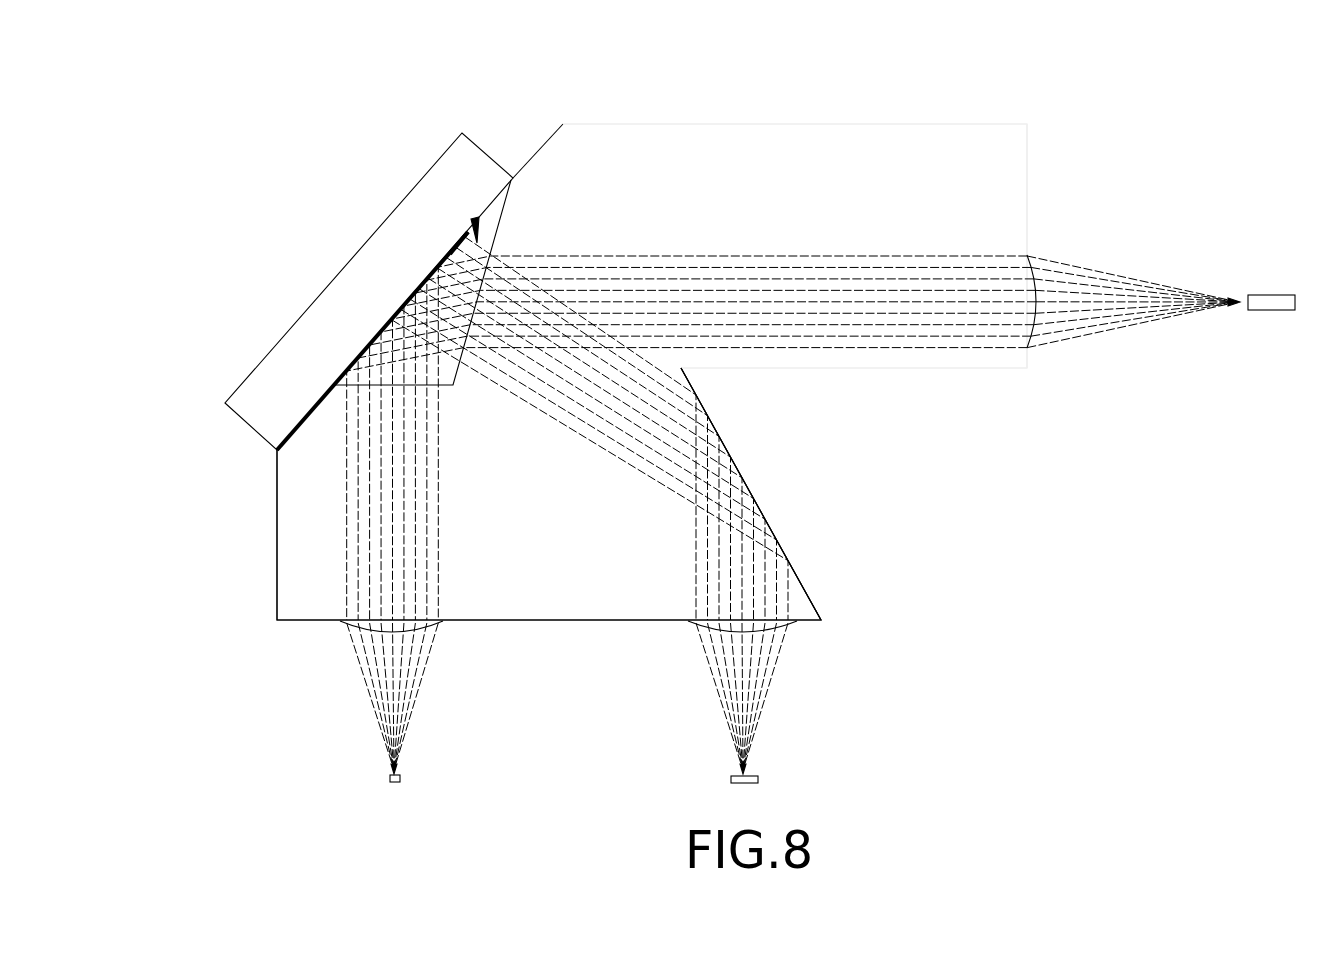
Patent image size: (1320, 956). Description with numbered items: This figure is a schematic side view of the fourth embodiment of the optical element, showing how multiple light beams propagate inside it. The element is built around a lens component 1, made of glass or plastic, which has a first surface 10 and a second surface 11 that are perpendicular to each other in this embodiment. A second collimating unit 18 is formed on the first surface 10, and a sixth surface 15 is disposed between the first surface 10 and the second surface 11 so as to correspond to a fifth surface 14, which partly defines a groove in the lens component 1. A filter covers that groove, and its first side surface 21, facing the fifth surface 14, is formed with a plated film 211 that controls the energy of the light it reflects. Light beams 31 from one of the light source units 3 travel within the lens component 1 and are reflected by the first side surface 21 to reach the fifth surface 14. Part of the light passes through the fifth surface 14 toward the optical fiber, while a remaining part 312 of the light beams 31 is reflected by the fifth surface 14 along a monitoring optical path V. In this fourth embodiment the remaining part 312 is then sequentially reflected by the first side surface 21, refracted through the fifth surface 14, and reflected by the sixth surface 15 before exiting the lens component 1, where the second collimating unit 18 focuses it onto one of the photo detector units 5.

The lens component 1 is at (750, 108).
The first surface 10 is at (612, 620).
The second surface 11 is at (1027, 182).
The fifth surface 14 is at (488, 230).
The sixth surface 15 is at (802, 583).
The second collimating unit 18 is at (780, 625).
The first side surface 21 is at (340, 390).
The plated film 211 is at (397, 313).
The remaining part of the light beams 312 is at (458, 236).
The light beams 31 is at (362, 673).
The light source unit 3 is at (400, 778).
The photo detector unit 5 is at (758, 780).
The monitoring optical path V is at (472, 218).